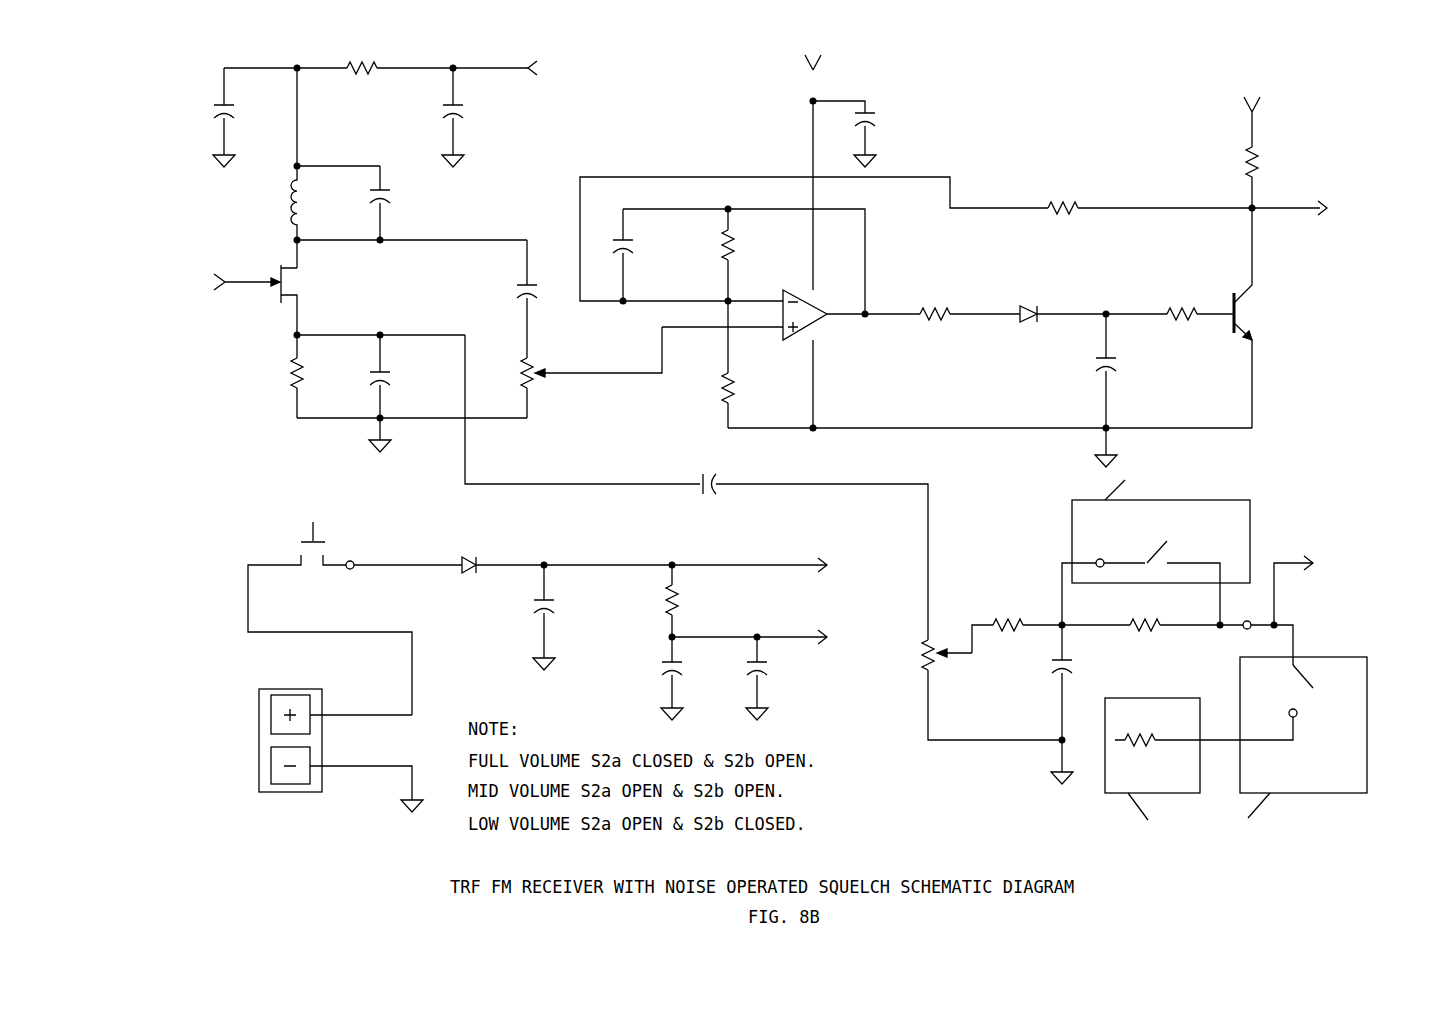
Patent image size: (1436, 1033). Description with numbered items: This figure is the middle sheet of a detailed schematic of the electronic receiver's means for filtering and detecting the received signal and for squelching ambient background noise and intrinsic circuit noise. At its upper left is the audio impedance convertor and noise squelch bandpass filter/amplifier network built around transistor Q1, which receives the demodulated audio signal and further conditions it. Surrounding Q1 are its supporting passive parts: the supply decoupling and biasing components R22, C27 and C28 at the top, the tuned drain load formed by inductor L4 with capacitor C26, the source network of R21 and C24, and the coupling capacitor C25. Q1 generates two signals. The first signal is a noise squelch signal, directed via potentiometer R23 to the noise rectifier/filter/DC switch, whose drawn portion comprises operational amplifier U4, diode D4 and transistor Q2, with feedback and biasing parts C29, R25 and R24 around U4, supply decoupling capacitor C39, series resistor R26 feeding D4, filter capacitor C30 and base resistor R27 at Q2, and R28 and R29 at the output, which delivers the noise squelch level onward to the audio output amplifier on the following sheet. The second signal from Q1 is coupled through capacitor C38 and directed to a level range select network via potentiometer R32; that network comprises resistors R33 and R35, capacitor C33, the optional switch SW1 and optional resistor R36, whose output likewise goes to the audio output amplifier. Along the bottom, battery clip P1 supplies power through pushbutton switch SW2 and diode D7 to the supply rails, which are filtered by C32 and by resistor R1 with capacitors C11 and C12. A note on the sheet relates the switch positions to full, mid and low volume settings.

The resistor 2.2K R22 is at (402, 70).
The capacitor 1uF C27 is at (235, 117).
The capacitor 0.01 C28 is at (476, 117).
The inductor 22mH L4 is at (335, 168).
The capacitor 0.015 C26 is at (412, 205).
The audio impedance convertor and noise squelch bandpass filter/amplifier network Q1 is at (244, 302).
The resistor 3.9K R21 is at (409, 375).
The capacitor 0.027 C24 is at (409, 393).
The capacitor 680pF C25 is at (493, 299).
The potentiometer R23 is at (566, 372).
The noise rectifier/filter/DC switch U4 is at (916, 266).
The capacitor 470pF C29 is at (739, 261).
The resistor 470K R25 is at (754, 255).
The resistor 1K R24 is at (749, 364).
The capacitor 1uF C39 is at (854, 97).
The resistor 120 R26 is at (969, 313).
The noise rectifier/filter/DC switch D4 is at (1083, 315).
The capacitor 1uF C30 is at (1120, 390).
The resistor 3.9K R27 is at (1199, 314).
The noise rectifier/filter/DC switch Q2 is at (1282, 318).
The resistor 270K R28 is at (1229, 217).
The resistor 10K R29 is at (1265, 139).
The capacitor 0.33 C38 is at (696, 487).
The pushbutton switch SW2 is at (355, 605).
The diode 1N5818 D7 is at (648, 566).
The capacitor 220uF 10V C32 is at (567, 617).
The resistor 22 R1 is at (766, 606).
The capacitor 22uF 16V C11 is at (690, 678).
The capacitor 1uF C12 is at (770, 678).
The battery clip P1 is at (289, 765).
The potentiometer R32 is at (970, 682).
The resistor 10K R33 is at (1060, 625).
The resistor 12K R35 is at (1267, 609).
The capacitor 3300pF C33 is at (1097, 704).
The optional switch S1a/S1b SW1 is at (1214, 658).
The resistor 39K R36 is at (1152, 745).